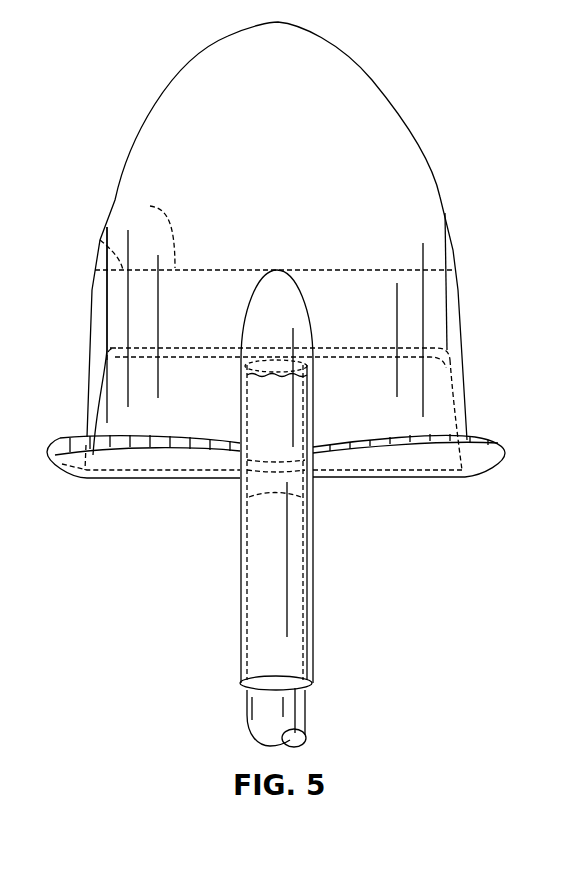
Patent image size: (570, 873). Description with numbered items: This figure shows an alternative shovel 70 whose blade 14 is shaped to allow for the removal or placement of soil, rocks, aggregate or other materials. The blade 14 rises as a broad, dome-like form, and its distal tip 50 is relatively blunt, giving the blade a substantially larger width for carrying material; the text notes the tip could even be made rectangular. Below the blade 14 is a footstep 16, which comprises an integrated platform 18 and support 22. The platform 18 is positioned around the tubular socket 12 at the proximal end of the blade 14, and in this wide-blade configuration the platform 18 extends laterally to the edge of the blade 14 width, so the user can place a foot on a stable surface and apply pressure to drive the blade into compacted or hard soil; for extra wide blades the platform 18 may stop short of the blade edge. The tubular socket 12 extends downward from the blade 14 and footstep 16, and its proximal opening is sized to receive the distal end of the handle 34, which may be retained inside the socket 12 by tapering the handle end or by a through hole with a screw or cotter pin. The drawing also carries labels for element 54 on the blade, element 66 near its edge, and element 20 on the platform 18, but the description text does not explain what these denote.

The shovel 70 is at (80, 75).
The distal tip 50 is at (372, 80).
The dome interior chamber 54 is at (283, 187).
The blade 14 is at (428, 210).
The support 22 is at (147, 233).
The seam 66 is at (92, 237).
The footstep 16 is at (495, 468).
The platform 18 is at (68, 460).
The flange edge 20 is at (100, 453).
The tubular socket 12 is at (312, 603).
The handle 34 is at (305, 714).